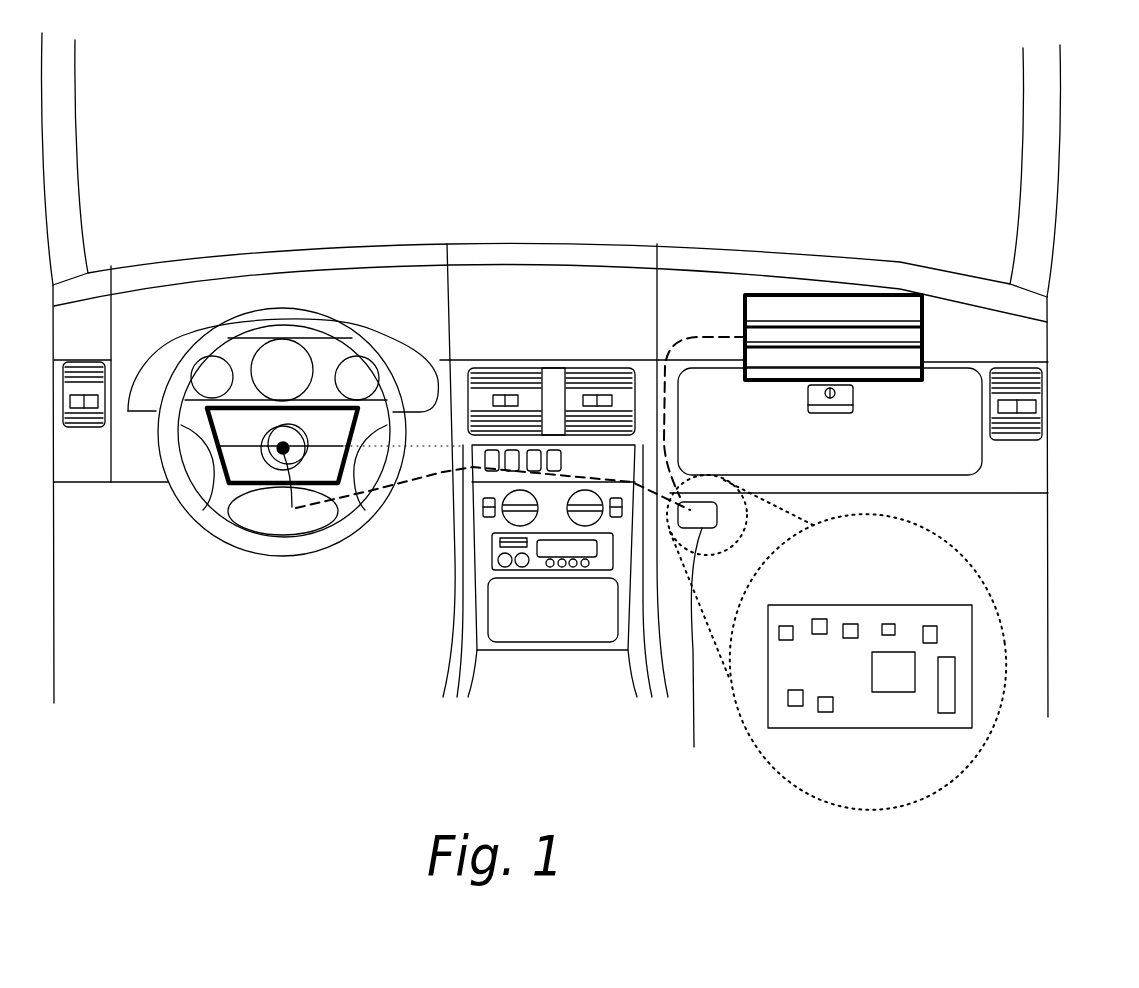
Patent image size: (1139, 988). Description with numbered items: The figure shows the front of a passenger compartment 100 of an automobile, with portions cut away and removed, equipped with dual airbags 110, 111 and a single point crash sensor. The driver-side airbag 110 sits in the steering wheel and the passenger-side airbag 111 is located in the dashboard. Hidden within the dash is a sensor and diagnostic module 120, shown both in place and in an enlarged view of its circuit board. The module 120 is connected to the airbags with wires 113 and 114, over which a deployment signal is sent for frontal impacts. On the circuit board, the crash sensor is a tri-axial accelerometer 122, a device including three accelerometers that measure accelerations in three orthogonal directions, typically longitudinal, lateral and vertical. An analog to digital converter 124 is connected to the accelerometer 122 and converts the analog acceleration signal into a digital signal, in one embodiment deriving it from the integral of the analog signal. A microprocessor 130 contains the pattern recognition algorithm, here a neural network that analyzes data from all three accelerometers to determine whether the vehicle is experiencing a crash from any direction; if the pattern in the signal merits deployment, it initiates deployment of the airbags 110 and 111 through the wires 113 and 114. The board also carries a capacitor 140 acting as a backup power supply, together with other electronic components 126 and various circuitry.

The passenger compartment 100 is at (1053, 477).
The airbag 110 is at (333, 430).
The airbag 111 is at (877, 307).
The wire 113 is at (385, 492).
The wire 114 is at (697, 333).
The sensor and diagnostic module 120 is at (772, 667).
The tri-axial accelerometer 122 is at (792, 628).
The analog to digital converter 124 is at (819, 626).
The other electronic components 126 is at (860, 628).
The microprocessor 130 is at (890, 677).
The capacitor 140 is at (952, 683).